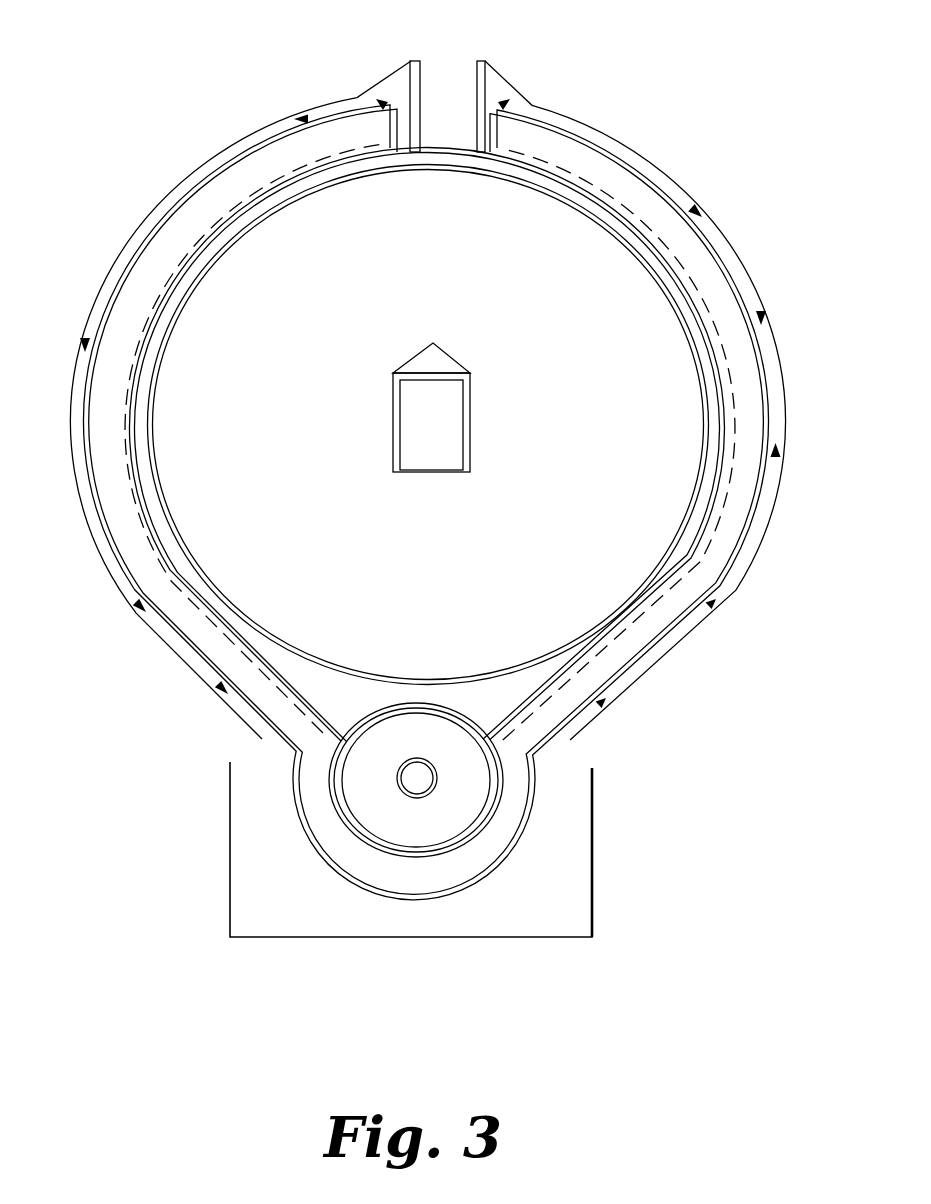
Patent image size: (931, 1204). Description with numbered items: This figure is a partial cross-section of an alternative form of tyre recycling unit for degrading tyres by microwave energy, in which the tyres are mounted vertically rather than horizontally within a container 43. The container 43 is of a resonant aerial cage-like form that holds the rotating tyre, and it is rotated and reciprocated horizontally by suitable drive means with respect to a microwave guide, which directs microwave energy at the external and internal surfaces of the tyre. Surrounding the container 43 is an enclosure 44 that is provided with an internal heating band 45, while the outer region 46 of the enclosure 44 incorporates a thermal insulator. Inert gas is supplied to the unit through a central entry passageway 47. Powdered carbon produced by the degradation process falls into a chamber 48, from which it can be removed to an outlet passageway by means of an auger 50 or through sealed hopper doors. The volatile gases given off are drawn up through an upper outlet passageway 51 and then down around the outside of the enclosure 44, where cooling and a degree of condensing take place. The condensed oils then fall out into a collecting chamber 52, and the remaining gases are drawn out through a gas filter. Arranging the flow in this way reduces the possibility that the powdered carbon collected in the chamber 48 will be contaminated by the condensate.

The container 43 is at (195, 295).
The enclosure 44 is at (135, 395).
The internal heating band 45 is at (155, 548).
The outer region 46 is at (700, 560).
The central entry passageway 47 is at (438, 365).
The chamber 48 is at (345, 785).
The auger 50 is at (483, 790).
The upper outlet passageway 51 is at (480, 113).
The collecting chamber 52 is at (592, 895).